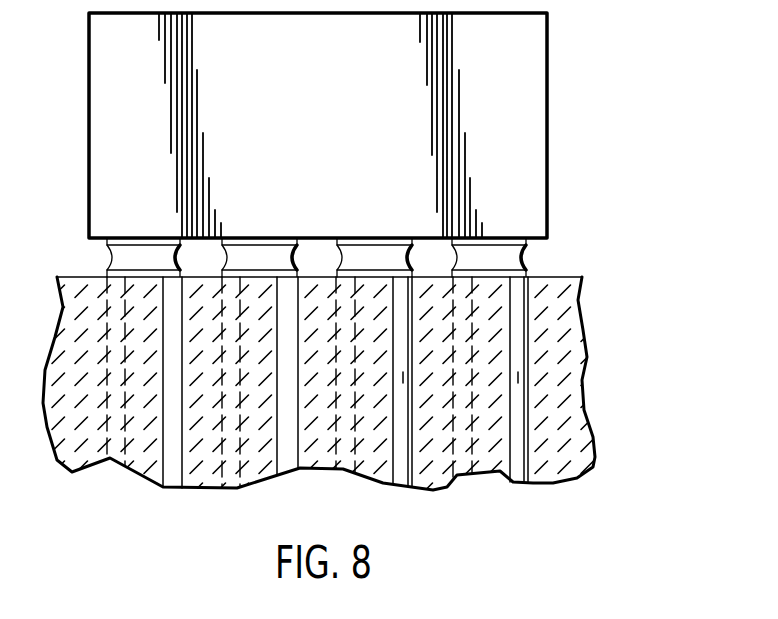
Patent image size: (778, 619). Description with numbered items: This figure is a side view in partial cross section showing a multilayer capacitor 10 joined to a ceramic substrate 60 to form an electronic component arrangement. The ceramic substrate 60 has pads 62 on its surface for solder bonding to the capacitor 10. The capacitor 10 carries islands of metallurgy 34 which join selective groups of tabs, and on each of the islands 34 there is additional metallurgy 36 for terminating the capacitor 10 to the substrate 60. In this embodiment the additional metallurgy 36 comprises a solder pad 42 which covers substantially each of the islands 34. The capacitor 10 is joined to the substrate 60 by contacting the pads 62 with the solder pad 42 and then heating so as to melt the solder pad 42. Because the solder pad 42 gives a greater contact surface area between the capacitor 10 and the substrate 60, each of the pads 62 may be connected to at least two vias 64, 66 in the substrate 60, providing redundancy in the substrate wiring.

The multilayer capacitor 10 is at (563, 129).
The islands of metallurgy 34 is at (132, 238).
The additional metallurgy 36 is at (444, 246).
The solder pad 42 is at (530, 260).
The pads 62 is at (530, 272).
The ceramic substrate 60 is at (555, 382).
The via 64 is at (517, 327).
The via 66 is at (463, 428).